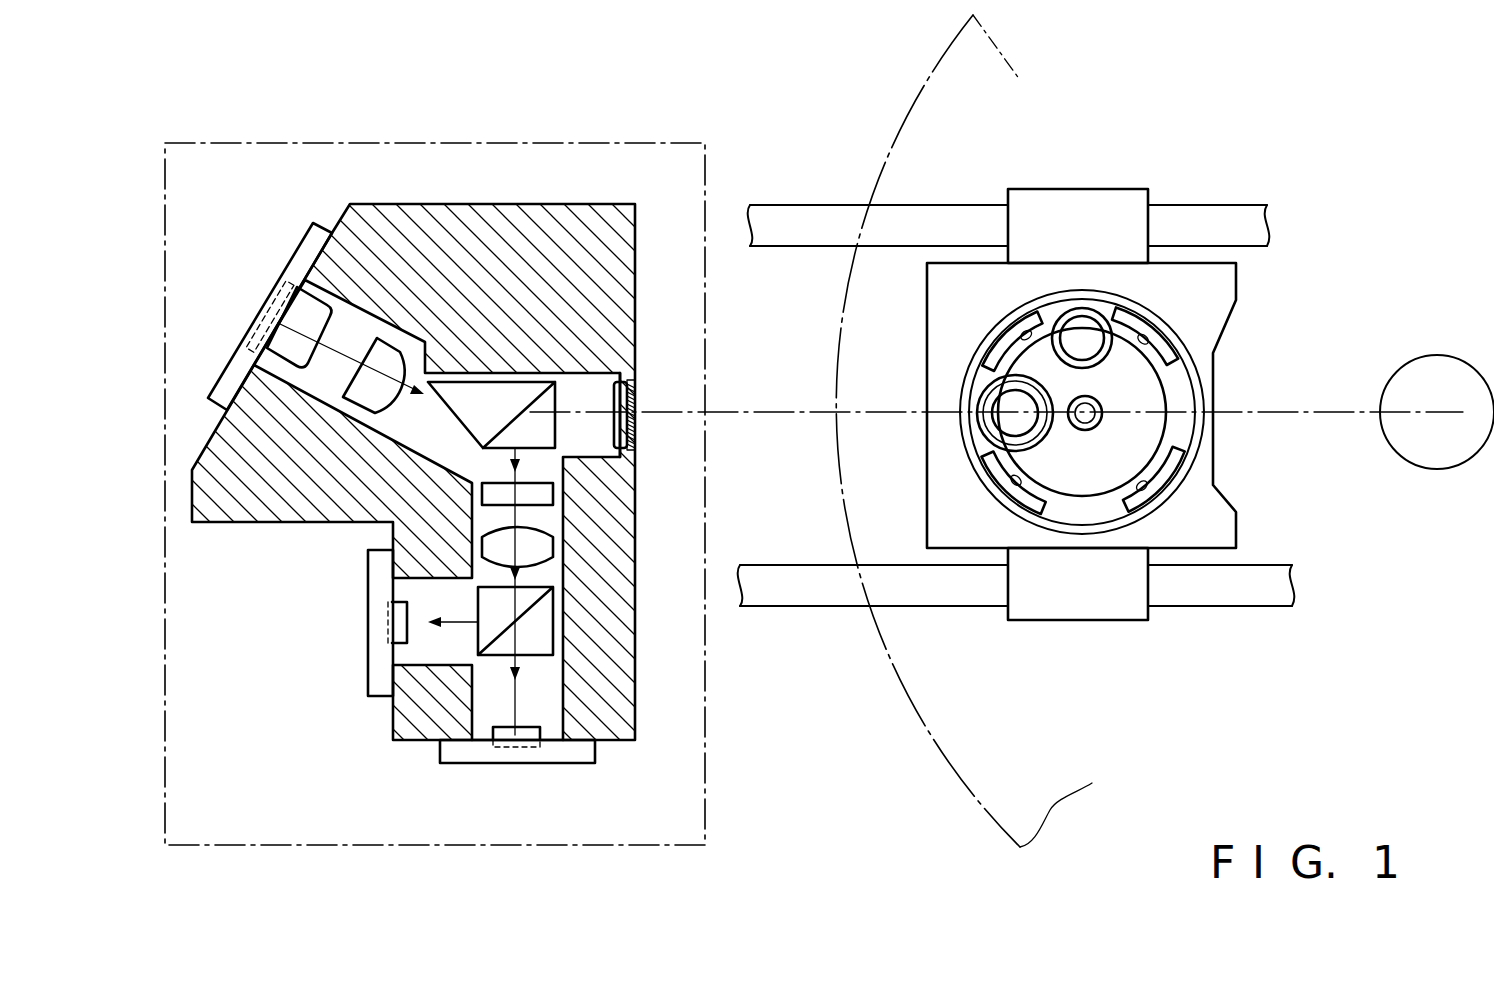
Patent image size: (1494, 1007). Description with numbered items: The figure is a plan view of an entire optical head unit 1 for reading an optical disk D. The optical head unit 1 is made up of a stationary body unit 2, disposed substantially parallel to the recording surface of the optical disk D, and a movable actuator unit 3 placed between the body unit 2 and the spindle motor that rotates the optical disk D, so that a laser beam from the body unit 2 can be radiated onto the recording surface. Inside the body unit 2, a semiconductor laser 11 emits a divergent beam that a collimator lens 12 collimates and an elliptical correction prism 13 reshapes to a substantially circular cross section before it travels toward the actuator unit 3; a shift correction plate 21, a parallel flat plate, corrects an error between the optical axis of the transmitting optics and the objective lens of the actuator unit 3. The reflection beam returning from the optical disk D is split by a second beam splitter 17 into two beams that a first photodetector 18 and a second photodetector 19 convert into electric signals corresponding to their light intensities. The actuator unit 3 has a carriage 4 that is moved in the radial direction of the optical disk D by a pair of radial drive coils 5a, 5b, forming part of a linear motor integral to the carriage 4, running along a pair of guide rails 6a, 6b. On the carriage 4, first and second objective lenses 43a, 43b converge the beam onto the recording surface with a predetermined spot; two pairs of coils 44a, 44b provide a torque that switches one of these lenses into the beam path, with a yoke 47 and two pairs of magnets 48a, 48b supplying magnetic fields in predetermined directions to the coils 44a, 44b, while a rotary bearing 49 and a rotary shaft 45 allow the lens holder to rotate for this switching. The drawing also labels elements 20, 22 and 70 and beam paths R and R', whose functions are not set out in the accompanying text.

The optical head unit 1 is at (688, 800).
The body unit 2 is at (580, 207).
The actuator unit 3 is at (1242, 186).
The carriage 4 is at (1237, 298).
The radial drive coil 5a is at (1130, 207).
The radial drive coil 5b is at (1135, 614).
The guide rail 6a is at (946, 222).
The guide rail 6b is at (1256, 590).
The semiconductor laser 11 is at (285, 345).
The collimator lens 12 is at (378, 398).
The elliptical correction prism 13 is at (523, 390).
The second beam splitter 17 is at (545, 628).
The first photodetector 18 is at (380, 684).
The second photodetector 19 is at (507, 763).
The mirror 20 is at (640, 440).
The shift correction plate 21 is at (640, 383).
The plate 22 is at (640, 408).
The first objective lens 43a is at (1003, 402).
The second objective lens 43b is at (1082, 333).
The coils 44a is at (1141, 342).
The coils 44b is at (1030, 340).
The rotary shaft 45 is at (1160, 452).
The yoke 47 is at (985, 490).
The magnets 48a is at (1146, 322).
The magnets 48b is at (1000, 340).
The rotary bearing 49 is at (1103, 417).
The shaft 70 is at (1087, 428).
The light beam R is at (399, 447).
The return beam R' is at (598, 694).
The optical disk D is at (965, 790).